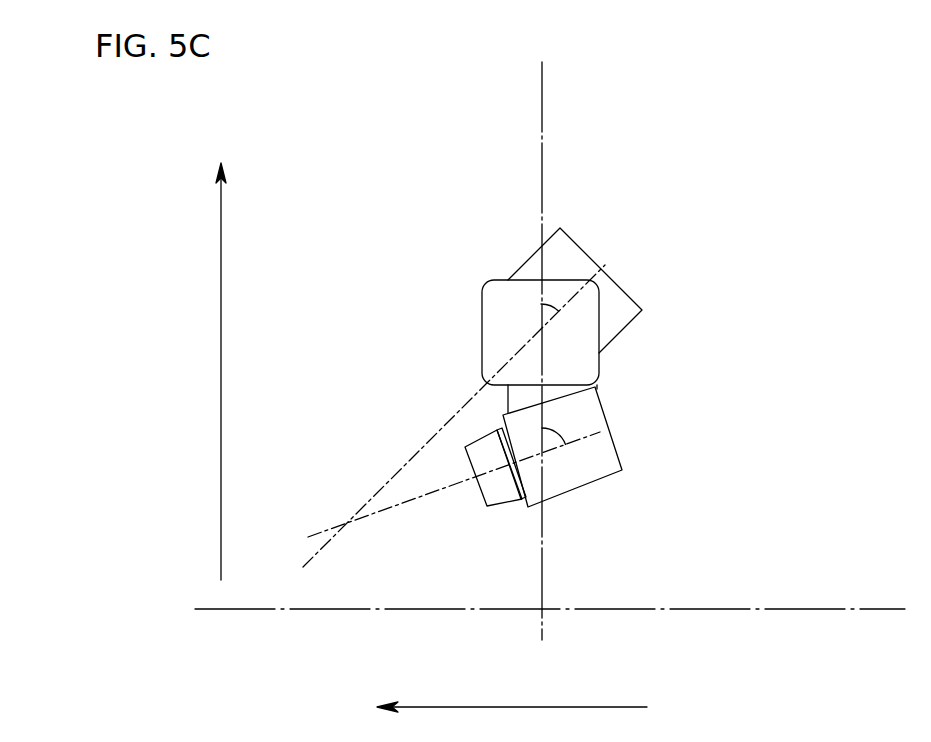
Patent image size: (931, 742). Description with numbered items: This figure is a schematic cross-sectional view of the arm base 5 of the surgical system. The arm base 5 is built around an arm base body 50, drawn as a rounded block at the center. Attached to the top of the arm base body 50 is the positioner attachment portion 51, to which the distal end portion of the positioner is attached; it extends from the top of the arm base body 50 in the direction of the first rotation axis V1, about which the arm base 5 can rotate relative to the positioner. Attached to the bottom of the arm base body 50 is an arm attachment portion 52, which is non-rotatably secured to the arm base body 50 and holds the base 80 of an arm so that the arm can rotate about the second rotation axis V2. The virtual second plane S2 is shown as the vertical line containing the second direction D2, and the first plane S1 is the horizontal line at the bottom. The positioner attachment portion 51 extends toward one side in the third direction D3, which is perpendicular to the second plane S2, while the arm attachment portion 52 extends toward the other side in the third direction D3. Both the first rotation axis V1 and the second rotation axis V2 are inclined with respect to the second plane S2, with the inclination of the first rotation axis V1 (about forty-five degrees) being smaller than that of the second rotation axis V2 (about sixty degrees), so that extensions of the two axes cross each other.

The arm base 5 is at (466, 221).
The arm base body 50 is at (487, 336).
The positioner attachment portion 51 is at (528, 259).
The arm attachment portion 52 is at (582, 481).
The base 80 is at (502, 503).
The first plane S1 is at (802, 608).
The second plane S2 is at (542, 130).
The first rotation axis V1 is at (607, 262).
The second rotation axis V2 is at (437, 495).
The second direction D2 is at (223, 358).
The third direction D3 is at (527, 709).